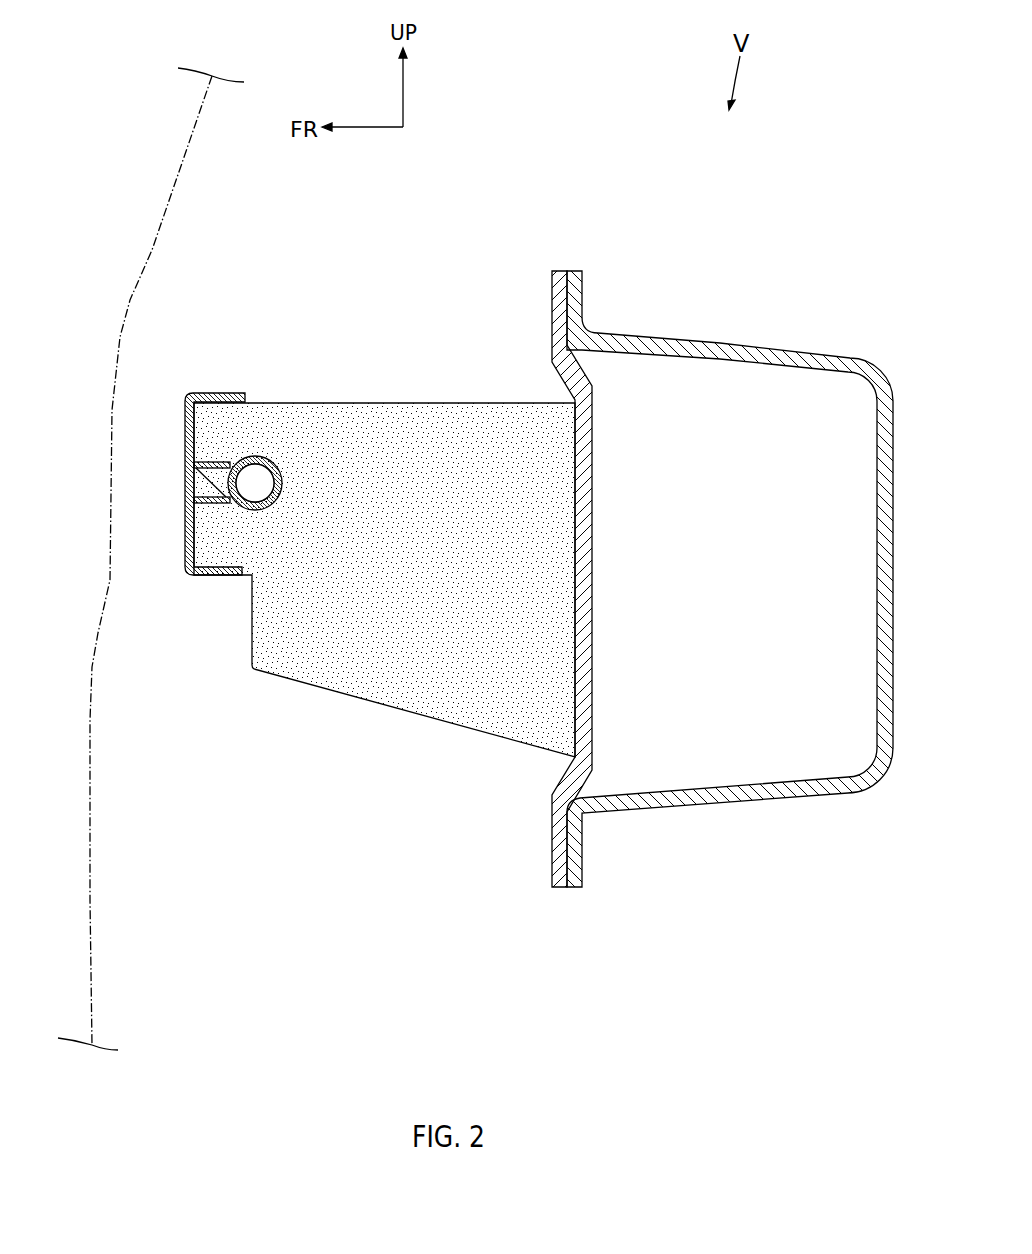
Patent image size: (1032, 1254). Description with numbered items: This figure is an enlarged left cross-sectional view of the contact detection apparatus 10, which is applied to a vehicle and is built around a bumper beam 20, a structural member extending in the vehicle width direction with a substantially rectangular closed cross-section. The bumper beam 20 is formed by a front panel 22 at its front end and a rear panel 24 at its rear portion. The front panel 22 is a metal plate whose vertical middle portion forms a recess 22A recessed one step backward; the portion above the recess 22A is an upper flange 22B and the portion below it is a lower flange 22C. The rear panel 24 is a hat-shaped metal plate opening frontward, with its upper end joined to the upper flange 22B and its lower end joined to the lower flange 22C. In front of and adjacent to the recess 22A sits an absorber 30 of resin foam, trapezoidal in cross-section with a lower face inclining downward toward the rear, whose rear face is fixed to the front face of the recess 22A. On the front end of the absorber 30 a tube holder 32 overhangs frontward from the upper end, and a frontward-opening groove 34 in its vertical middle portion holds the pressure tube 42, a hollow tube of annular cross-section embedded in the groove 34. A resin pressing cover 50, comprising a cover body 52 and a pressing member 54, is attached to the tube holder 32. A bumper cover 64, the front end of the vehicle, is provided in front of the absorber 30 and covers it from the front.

The contact detection apparatus 10 is at (652, 134).
The bumper beam 20 is at (670, 532).
The front panel 22 is at (556, 270).
The recess 22A is at (594, 560).
The upper flange 22B is at (552, 320).
The lower flange 22C is at (551, 850).
The rear panel 24 is at (576, 270).
The absorber 30 is at (378, 521).
The tube holder 32 is at (243, 576).
The groove 34 is at (238, 465).
The pressure tube 42 is at (269, 459).
The pressing cover 50 is at (156, 430).
The cover body 52 is at (185, 450).
The pressing member 54 is at (193, 488).
The bumper cover 64 is at (128, 318).